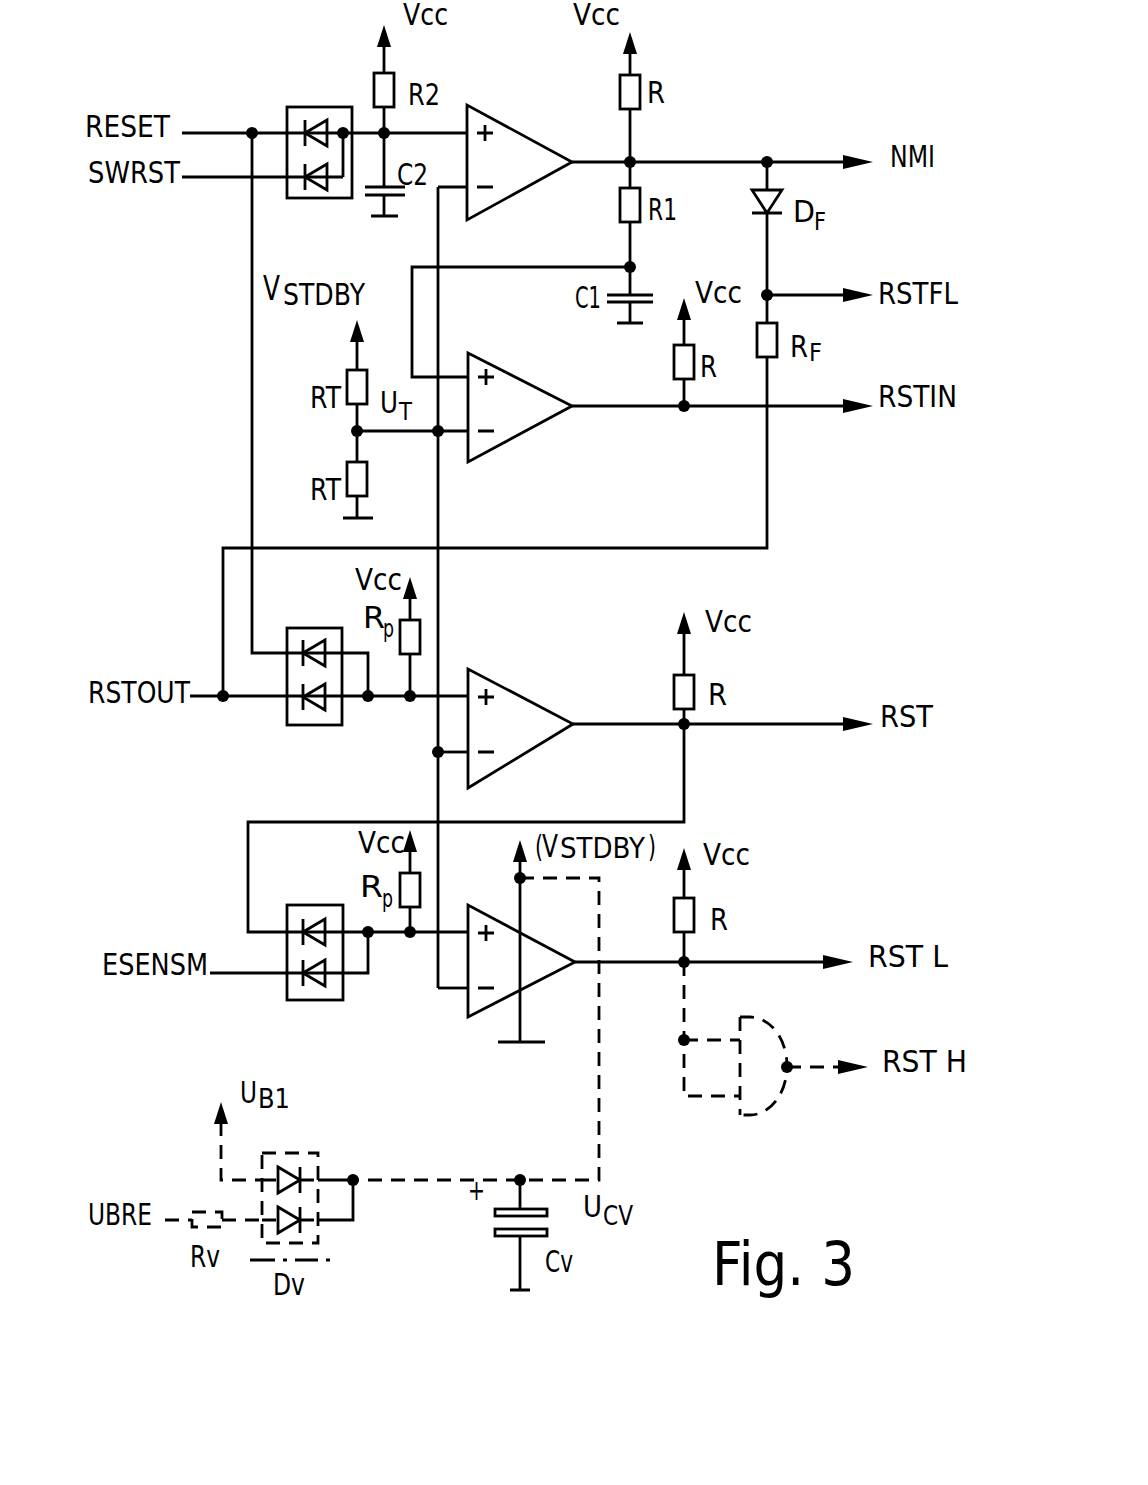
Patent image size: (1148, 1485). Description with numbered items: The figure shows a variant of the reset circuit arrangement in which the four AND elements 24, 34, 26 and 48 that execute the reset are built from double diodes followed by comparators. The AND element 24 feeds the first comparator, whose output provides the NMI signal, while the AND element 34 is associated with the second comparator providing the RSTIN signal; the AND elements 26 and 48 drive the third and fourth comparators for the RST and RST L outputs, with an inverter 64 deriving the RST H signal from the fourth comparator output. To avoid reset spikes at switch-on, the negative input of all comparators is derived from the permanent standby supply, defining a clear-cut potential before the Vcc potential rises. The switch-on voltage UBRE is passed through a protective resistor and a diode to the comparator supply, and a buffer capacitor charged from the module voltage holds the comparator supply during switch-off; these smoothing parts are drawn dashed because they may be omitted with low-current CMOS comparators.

The AND element 24 is at (481, 72).
The AND element 34 is at (473, 473).
The AND element 26 is at (468, 647).
The AND element 48 is at (408, 983).
The inverter gate 64 is at (773, 1092).